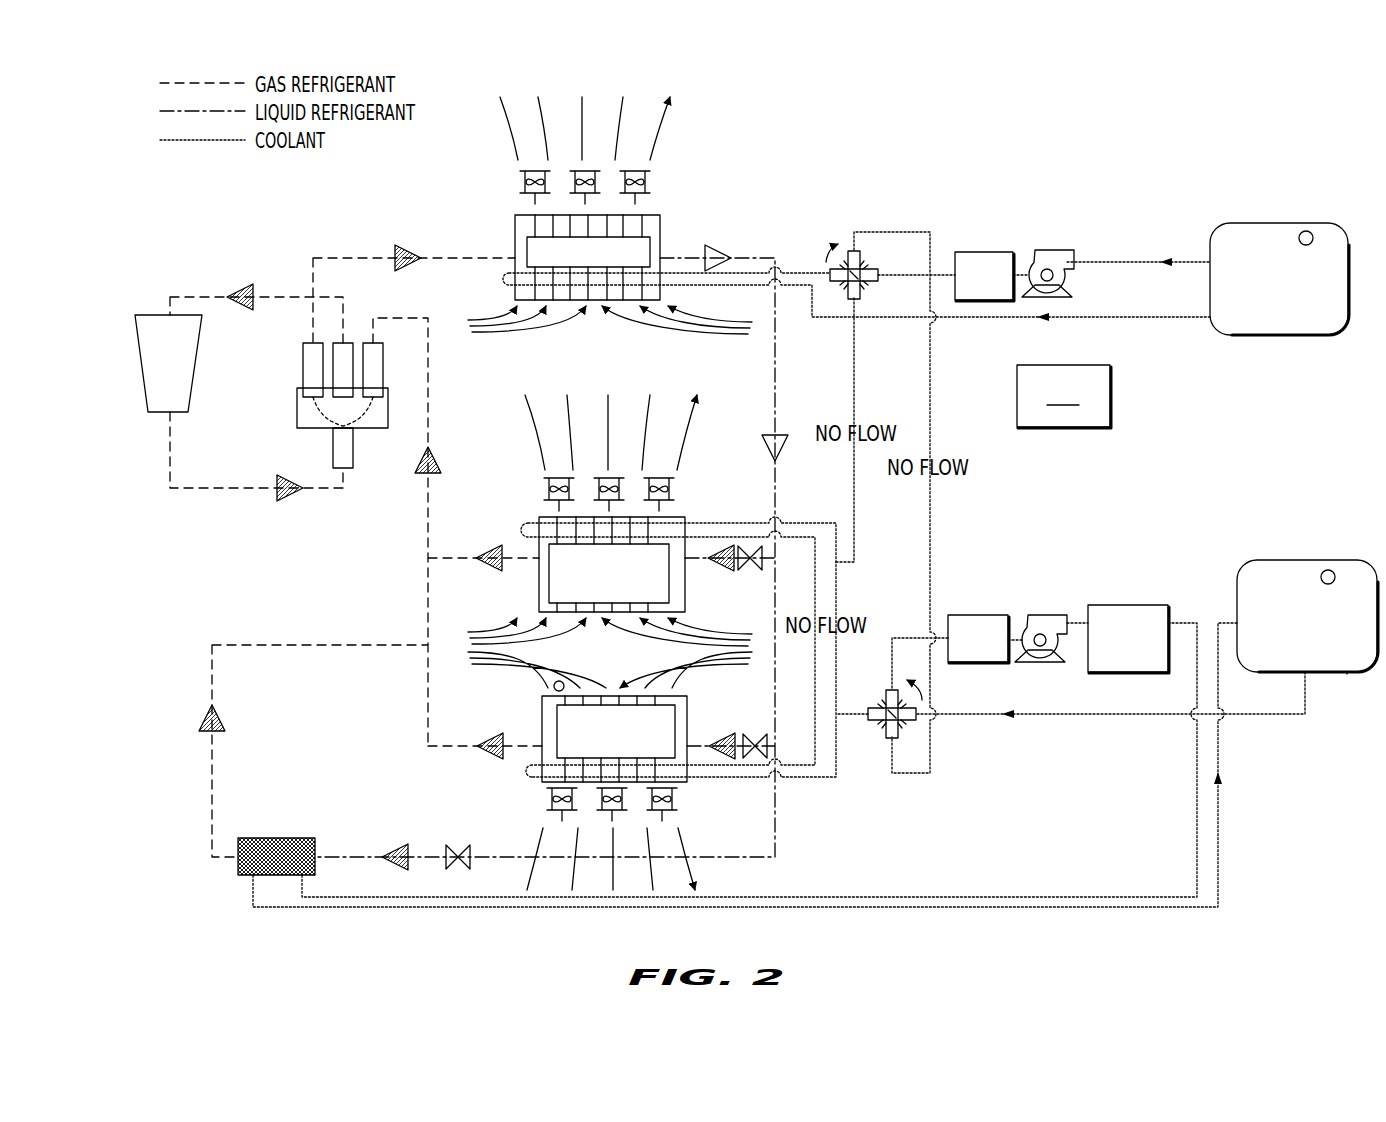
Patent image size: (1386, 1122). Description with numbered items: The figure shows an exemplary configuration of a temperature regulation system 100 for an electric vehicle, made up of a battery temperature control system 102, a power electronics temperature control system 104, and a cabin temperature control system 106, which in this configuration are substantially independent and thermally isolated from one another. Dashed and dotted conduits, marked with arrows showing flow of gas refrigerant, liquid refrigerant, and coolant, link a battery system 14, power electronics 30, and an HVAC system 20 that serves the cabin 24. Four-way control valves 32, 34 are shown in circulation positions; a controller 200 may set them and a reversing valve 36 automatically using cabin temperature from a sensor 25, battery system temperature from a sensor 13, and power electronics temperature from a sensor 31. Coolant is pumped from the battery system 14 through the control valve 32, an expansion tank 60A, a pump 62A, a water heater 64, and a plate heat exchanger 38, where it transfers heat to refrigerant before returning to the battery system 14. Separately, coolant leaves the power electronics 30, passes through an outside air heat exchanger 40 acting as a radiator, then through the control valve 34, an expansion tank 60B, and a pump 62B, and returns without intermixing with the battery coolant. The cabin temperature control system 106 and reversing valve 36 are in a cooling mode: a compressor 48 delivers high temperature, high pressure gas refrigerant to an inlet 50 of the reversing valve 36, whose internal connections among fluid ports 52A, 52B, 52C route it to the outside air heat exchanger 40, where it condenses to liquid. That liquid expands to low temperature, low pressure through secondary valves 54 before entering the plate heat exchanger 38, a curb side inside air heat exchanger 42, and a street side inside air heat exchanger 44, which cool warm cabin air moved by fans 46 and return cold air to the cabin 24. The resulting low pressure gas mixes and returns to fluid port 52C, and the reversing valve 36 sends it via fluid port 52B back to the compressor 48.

The sensor 13 is at (1328, 570).
The battery system 14 is at (1347, 675).
The HVAC system 20 is at (658, 103).
The cabin 24 is at (505, 642).
The sensor 25 is at (554, 685).
The power electronics 30 is at (1279, 283).
The sensor 31 is at (1306, 231).
The control valve 32 is at (888, 735).
The control valve 34 is at (860, 290).
The reversing valve 36 is at (324, 410).
The plate heat exchanger 38 is at (275, 838).
The outside air heat exchanger 40 is at (660, 237).
The curb side inside air heat exchanger 42 is at (539, 578).
The street side inside air heat exchanger 44 is at (542, 725).
The fan 46 is at (650, 185).
The compressor 48 is at (156, 314).
The inlet 50 is at (338, 448).
The fluid port 52A is at (300, 392).
The fluid port 52B is at (348, 345).
The fluid port 52C is at (383, 368).
The secondary valve 54 is at (752, 545).
The expansion tank 60A is at (983, 615).
The expansion tank 60B is at (983, 252).
The pump 62A is at (1035, 615).
The pump 62B is at (1042, 250).
The water heater 64 is at (1128, 605).
The temperature regulation system 100 is at (1170, 115).
The battery temperature control system 102 is at (1255, 755).
The power electronics temperature control system 104 is at (1197, 370).
The cabin temperature control system 106 is at (378, 930).
The controller 200 is at (1064, 396).